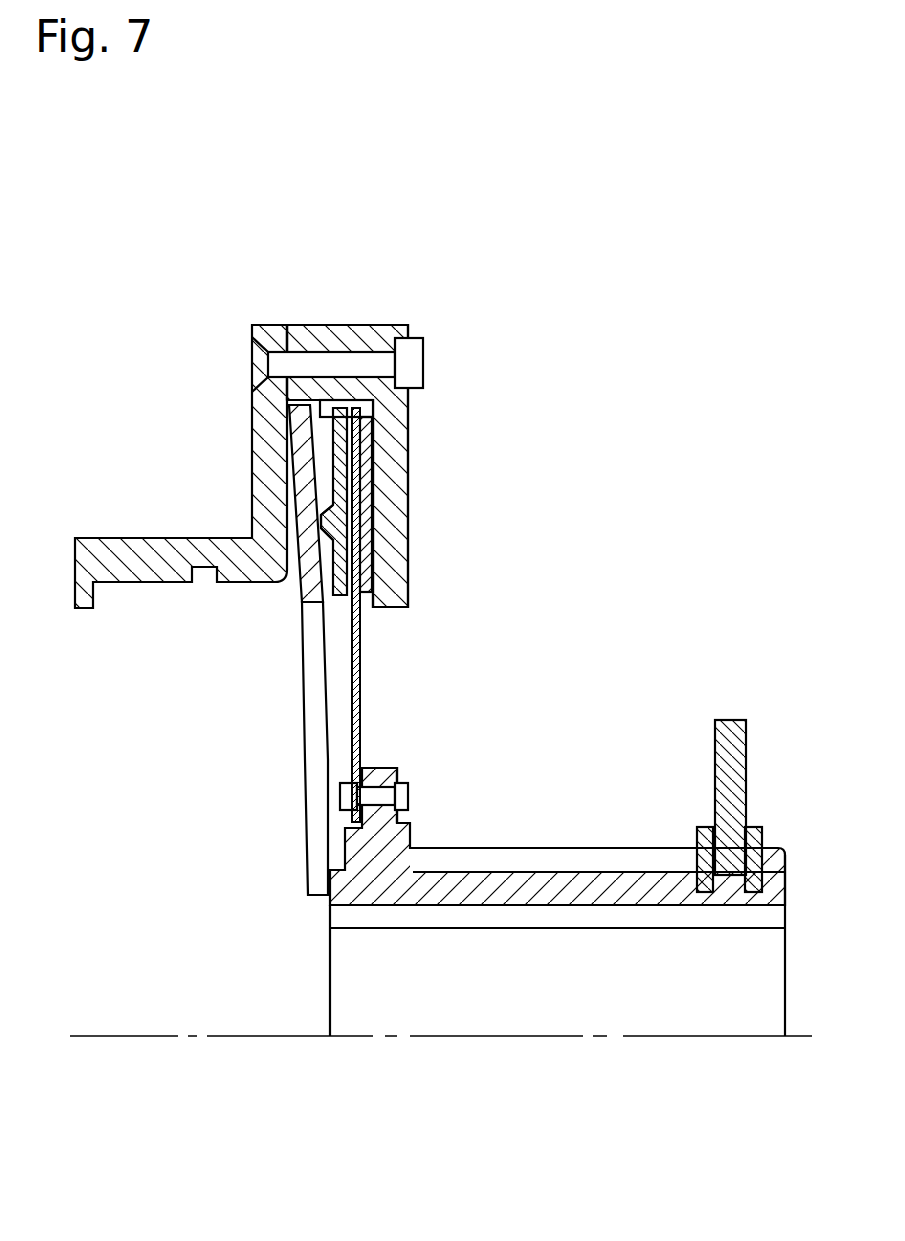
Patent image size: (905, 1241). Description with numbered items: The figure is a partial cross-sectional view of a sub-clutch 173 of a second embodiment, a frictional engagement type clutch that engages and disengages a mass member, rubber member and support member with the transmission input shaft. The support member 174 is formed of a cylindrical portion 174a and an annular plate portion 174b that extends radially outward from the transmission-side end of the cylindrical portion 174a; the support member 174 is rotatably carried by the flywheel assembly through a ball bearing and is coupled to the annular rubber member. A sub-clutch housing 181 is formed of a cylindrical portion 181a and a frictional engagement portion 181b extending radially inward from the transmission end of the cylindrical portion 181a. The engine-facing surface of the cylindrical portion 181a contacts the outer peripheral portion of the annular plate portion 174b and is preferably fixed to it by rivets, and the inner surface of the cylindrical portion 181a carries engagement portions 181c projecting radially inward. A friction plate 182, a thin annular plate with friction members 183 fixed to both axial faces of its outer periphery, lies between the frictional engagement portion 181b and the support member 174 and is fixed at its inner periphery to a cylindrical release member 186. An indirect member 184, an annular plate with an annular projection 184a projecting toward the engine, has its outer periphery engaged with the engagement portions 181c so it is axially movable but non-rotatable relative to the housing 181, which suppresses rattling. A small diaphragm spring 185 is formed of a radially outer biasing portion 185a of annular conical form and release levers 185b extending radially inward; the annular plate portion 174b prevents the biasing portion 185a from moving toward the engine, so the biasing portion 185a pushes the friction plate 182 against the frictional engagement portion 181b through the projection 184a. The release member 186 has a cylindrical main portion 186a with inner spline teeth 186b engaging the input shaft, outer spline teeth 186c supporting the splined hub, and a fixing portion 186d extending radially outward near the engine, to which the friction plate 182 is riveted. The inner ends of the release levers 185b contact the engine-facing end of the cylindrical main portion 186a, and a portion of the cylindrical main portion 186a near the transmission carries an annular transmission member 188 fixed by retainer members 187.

The sub-clutch 173 is at (619, 288).
The support member 174 is at (186, 460).
The cylindrical portion 174a is at (135, 575).
The annular plate portion 174b is at (270, 323).
The sub-clutch housing 181 is at (405, 425).
The cylindrical portion 181a is at (347, 323).
The frictional engagement portion 181b is at (397, 572).
The engagement portions 181c is at (360, 410).
The friction plate 182 is at (363, 642).
The friction members 183 is at (372, 527).
The indirect member 184 is at (252, 582).
The annular projection 184a is at (321, 522).
The small diaphragm spring 185 is at (236, 650).
The radially outer biasing portion 185a is at (300, 445).
The release levers 185b is at (313, 832).
The cylindrical release member 186 is at (557, 897).
The cylindrical main portion 186a is at (498, 872).
The inner spline teeth 186b is at (625, 912).
The outer spline teeth 186c is at (588, 860).
The fixing portion 186d is at (395, 767).
The retainer members 187 is at (703, 840).
The transmission member 188 is at (731, 735).